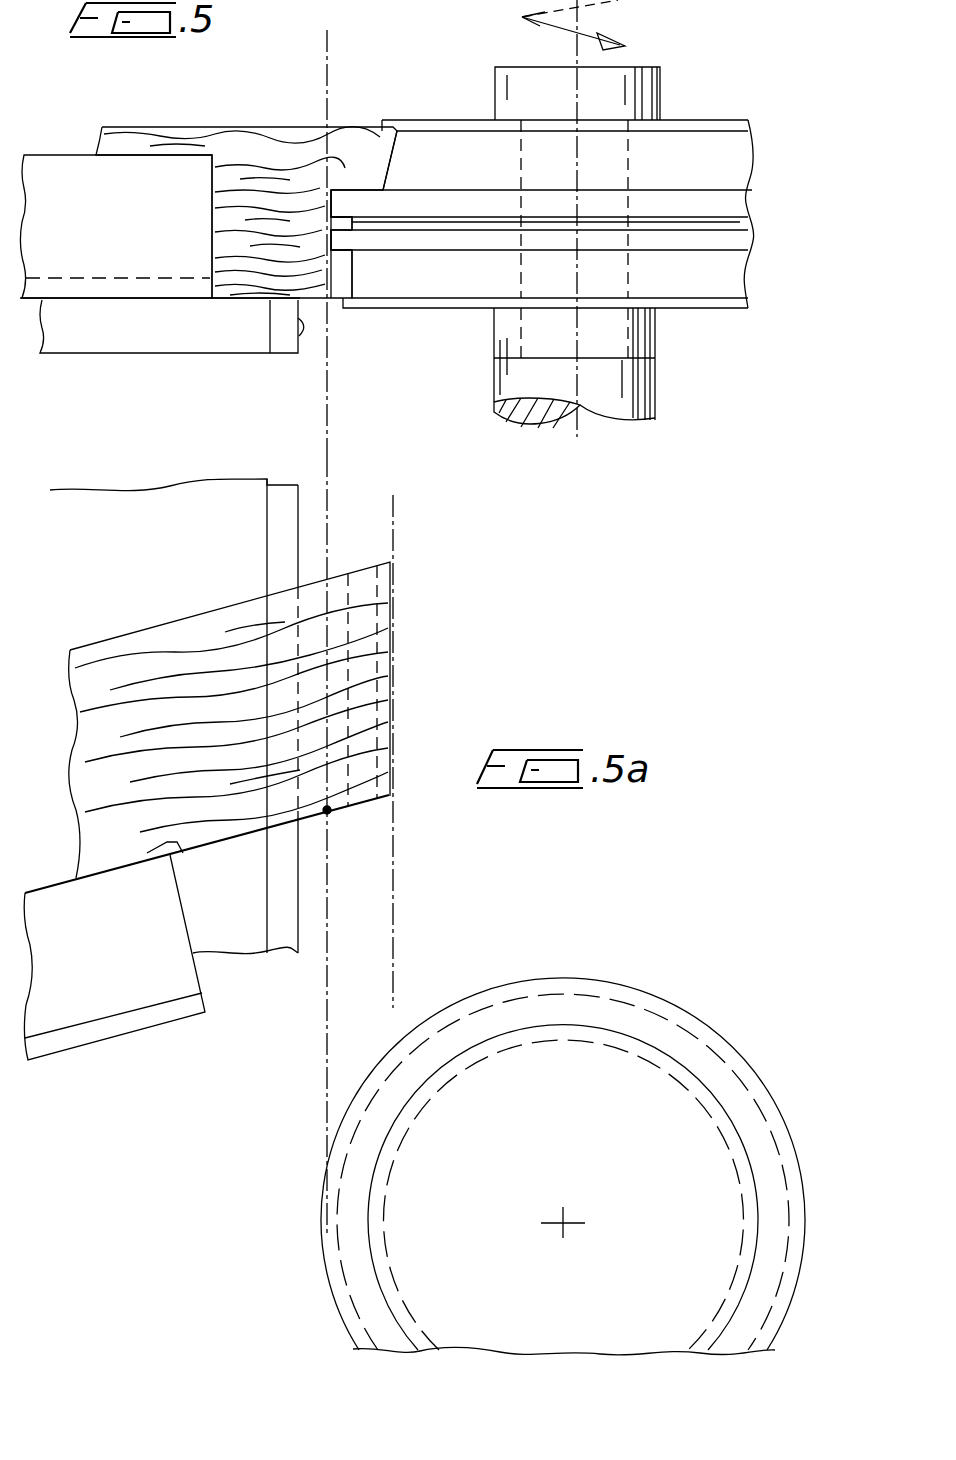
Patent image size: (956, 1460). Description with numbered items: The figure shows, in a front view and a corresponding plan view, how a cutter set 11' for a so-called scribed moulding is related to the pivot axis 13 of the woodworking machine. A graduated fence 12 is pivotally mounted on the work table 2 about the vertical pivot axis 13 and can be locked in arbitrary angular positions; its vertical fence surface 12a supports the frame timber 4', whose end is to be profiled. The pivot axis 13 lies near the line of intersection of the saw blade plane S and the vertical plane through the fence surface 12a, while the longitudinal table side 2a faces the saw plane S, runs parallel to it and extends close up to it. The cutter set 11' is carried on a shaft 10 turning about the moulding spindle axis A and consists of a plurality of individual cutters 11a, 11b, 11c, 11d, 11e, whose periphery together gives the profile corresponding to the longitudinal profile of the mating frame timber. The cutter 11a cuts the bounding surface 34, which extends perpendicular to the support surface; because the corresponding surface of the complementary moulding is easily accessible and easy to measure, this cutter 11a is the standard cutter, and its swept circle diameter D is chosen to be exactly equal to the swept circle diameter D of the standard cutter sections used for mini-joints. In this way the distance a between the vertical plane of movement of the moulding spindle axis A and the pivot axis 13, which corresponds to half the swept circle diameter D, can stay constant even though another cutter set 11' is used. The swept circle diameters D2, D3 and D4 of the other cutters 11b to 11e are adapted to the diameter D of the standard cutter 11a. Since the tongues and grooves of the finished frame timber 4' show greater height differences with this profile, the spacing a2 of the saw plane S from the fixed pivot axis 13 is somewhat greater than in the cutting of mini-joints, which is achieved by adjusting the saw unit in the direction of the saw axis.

In FIG. 5, the work table 2 is at (207, 492).
In FIG. 5A, the work table 2 is at (174, 716).
In FIG. 5, the longitudinal table side 2a is at (297, 345).
In FIG. 5, the frame timber 4' is at (246, 190).
In FIG. 5A, the frame timber 4' is at (207, 723).
In FIG. 5, the bounding surface 34 is at (329, 184).
In FIG. 5, the shaft 10 is at (655, 407).
In FIG. 5, the cutter set 11' is at (582, 183).
In FIG. 5A, the cutter set 11' is at (563, 1166).
In FIG. 5, the standard cutter 11a is at (735, 200).
In FIG. 5, the cutter 11b is at (723, 238).
In FIG. 5, the cutter 11c is at (735, 240).
In FIG. 5, the cutter 11d is at (733, 287).
In FIG. 5, the cutter 11e is at (736, 152).
In FIG. 5A, the graduated fence 12 is at (158, 986).
In FIG. 5A, the vertical fence surface 12a is at (187, 860).
In FIG. 5A, the pivot axis 13 is at (331, 814).
In FIG. 5, the moulding spindle axis A is at (576, 379).
In FIG. 5A, the moulding spindle axis A is at (563, 1221).
In FIG. 5, the swept circle diameter D is at (332, 205).
In FIG. 5, the swept circle diameter D2 is at (353, 226).
In FIG. 5, the swept circle diameter D3 is at (750, 272).
In FIG. 5, the swept circle diameter D4 is at (745, 163).
In FIG. 5, the distance a is at (577, 42).
In FIG. 5A, the spacing a2 is at (393, 518).
In FIG. 5A, the saw blade plane S is at (410, 541).